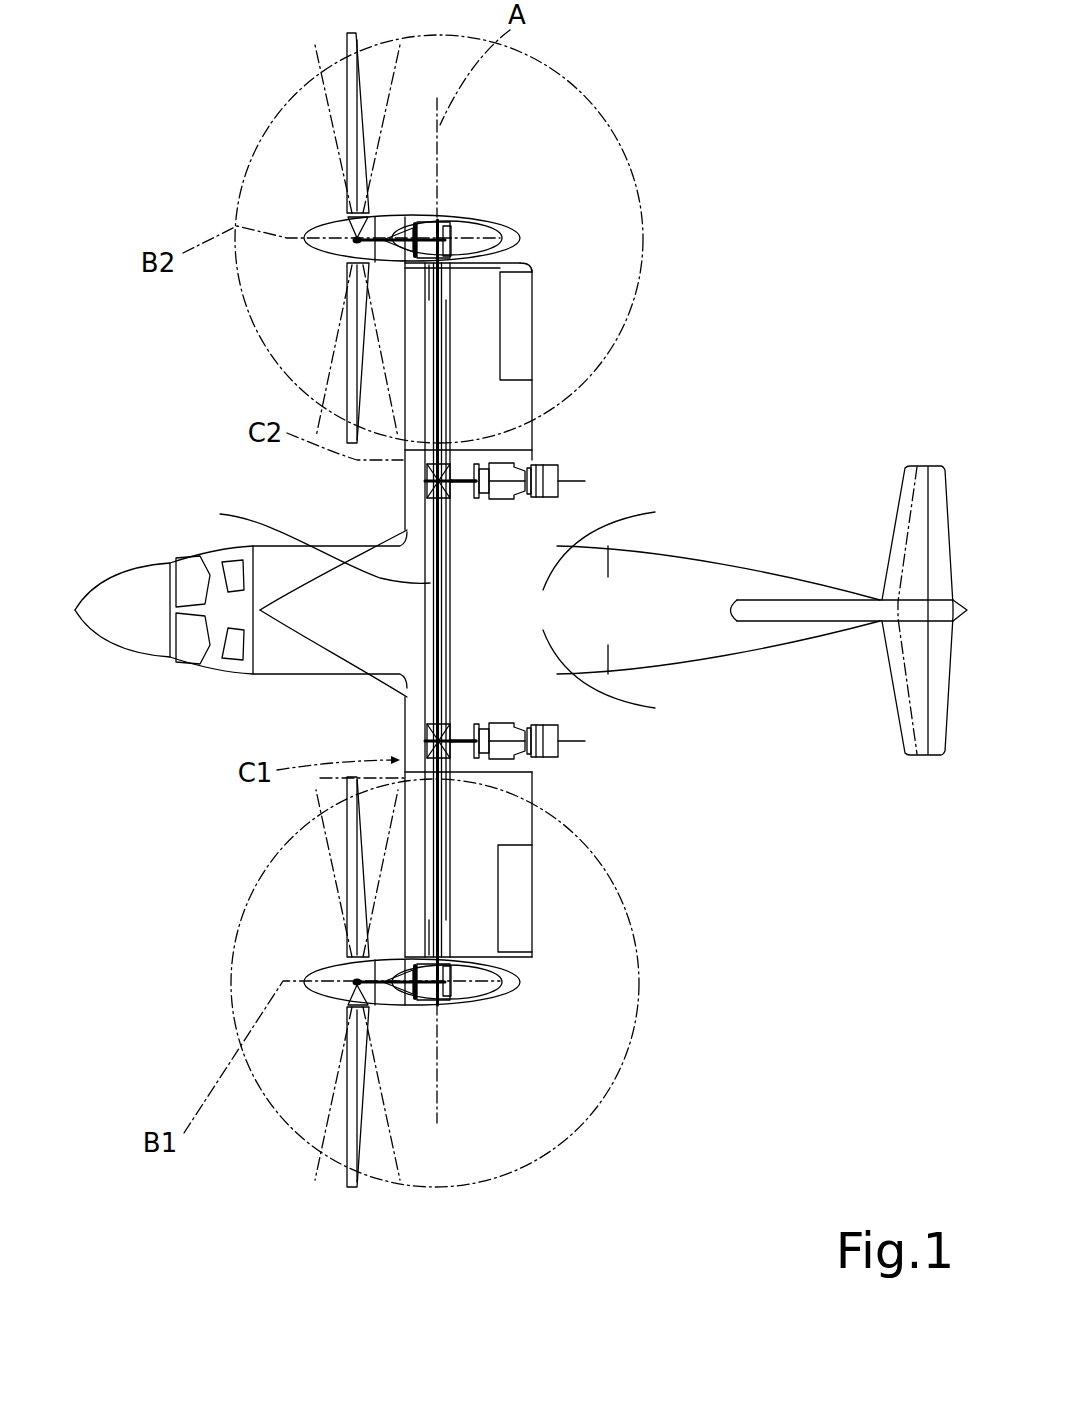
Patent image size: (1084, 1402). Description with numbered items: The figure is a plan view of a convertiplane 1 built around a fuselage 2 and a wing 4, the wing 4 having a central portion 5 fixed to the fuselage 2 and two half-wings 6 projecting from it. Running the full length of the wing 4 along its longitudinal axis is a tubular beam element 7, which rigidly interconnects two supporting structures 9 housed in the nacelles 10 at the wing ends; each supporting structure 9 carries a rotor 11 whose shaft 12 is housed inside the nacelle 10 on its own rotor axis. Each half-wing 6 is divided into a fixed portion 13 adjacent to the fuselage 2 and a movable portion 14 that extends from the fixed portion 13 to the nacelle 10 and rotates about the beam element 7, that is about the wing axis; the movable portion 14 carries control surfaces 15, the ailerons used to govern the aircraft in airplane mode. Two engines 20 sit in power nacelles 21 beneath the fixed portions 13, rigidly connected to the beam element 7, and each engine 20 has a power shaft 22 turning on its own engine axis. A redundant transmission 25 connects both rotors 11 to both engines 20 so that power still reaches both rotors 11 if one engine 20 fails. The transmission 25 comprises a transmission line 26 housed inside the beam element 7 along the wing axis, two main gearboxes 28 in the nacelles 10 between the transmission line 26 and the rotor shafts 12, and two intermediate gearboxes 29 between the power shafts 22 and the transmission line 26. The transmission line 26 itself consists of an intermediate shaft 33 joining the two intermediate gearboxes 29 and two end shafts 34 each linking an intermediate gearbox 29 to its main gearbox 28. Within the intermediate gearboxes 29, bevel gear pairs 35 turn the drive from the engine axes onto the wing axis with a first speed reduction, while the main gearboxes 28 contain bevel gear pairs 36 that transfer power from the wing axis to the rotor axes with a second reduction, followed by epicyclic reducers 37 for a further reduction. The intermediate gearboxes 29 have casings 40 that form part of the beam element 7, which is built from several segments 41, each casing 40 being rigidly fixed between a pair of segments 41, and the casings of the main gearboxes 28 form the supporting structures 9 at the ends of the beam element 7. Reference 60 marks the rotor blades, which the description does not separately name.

The convertiplane 1 is at (832, 86).
The fuselage 2 is at (197, 652).
The wing 4 is at (405, 768).
The central portion 5 is at (632, 522).
The half-wing 6 is at (538, 433).
The beam element 7 is at (458, 353).
The supporting structure 9 is at (430, 214).
The nacelle 10 is at (462, 228).
The rotor 11 is at (333, 199).
The shaft 12 is at (378, 222).
The fixed portion 13 is at (405, 520).
The movable portion 14 is at (508, 358).
The control surfaces 15 is at (512, 357).
The engine 20 is at (545, 467).
The power nacelle 21 is at (560, 481).
The power shaft 22 is at (492, 507).
The redundant transmission 25 is at (447, 566).
The transmission line 26 is at (444, 627).
The main gearbox 28 is at (470, 252).
The intermediate gearbox 29 is at (428, 458).
The intermediate shaft 33 is at (220, 514).
The end shaft 34 is at (428, 275).
The bevel gear pair 35 is at (425, 481).
The bevel gear pair 36 is at (457, 245).
The epicyclic reducer 37 is at (378, 242).
The casing 40 is at (455, 500).
The segment 41 is at (445, 318).
The blade 60 is at (348, 122).